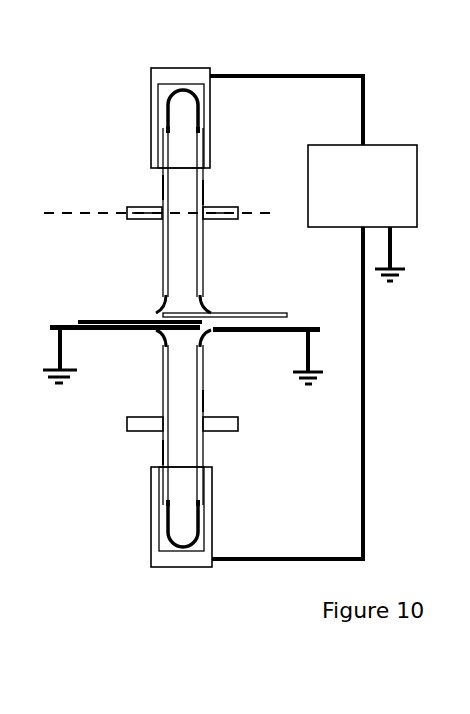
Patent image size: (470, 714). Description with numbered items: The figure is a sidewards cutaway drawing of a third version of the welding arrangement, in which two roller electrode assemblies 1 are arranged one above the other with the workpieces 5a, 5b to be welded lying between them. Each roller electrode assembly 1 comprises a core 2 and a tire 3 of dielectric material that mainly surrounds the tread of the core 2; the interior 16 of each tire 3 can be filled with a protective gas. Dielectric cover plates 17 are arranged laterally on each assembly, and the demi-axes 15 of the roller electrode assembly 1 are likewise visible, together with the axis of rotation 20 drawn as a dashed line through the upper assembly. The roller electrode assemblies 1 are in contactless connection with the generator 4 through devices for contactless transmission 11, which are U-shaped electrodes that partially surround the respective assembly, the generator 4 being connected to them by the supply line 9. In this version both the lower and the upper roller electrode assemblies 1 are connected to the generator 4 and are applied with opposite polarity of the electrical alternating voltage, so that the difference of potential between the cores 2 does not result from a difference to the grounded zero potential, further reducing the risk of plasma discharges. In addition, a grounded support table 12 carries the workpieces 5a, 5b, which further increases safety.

The roller electrode assembly 1 is at (124, 98).
The core 2 is at (191, 261).
The tire 3 is at (168, 92).
The generator 4 is at (380, 195).
The workpiece 5a is at (267, 313).
The workpiece 5b is at (89, 319).
The supply line 9 is at (305, 76).
The device for contactless transmission 11 is at (183, 72).
The grounded support table 12 is at (318, 325).
The demi-axes 15 is at (147, 217).
The interior 16 is at (183, 106).
The dielectric cover plates 17 is at (162, 185).
The axis of rotation 20 is at (83, 213).